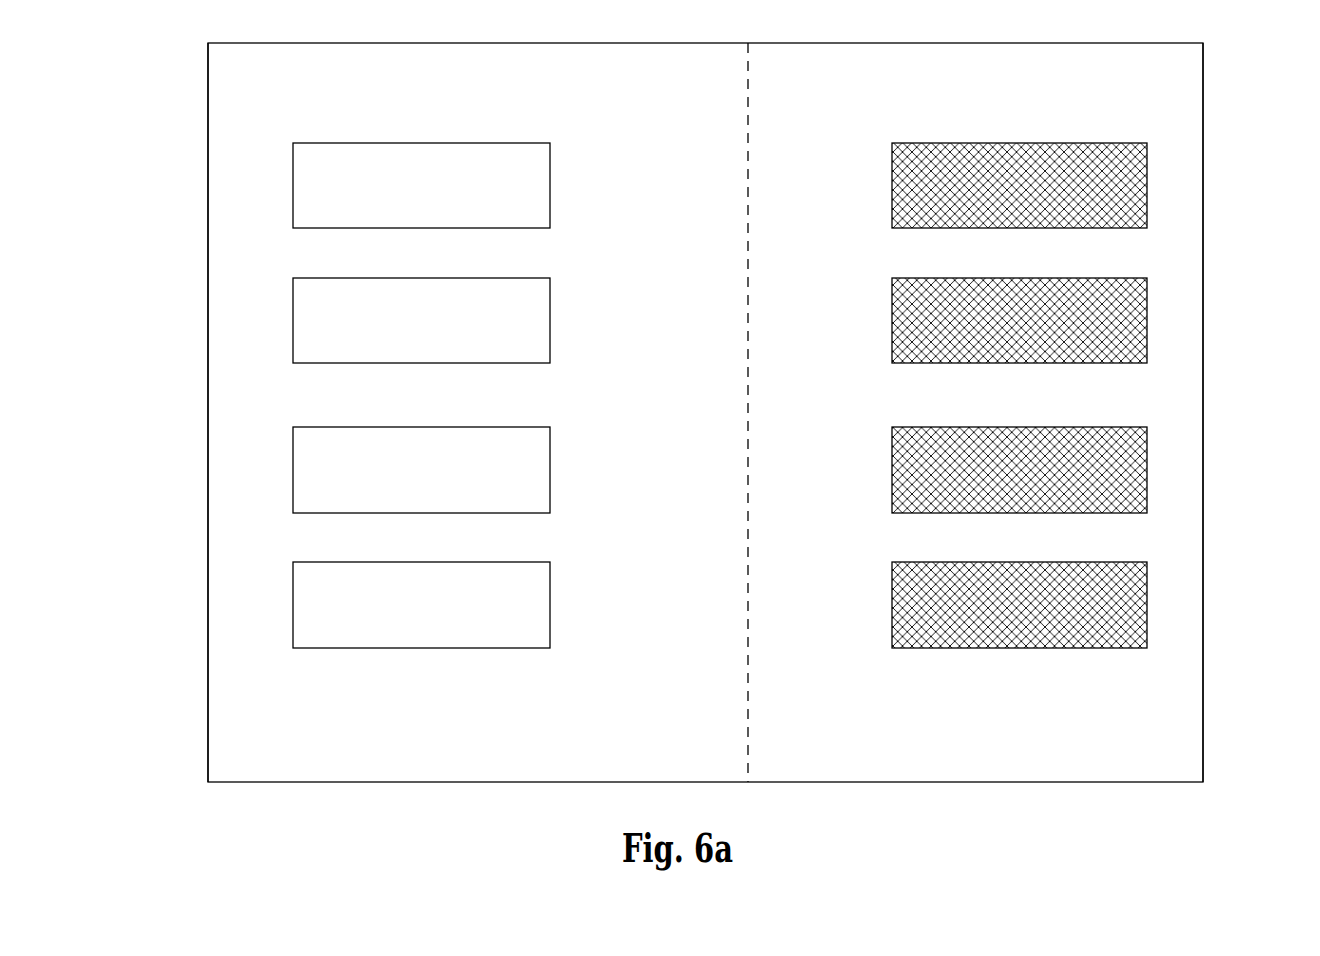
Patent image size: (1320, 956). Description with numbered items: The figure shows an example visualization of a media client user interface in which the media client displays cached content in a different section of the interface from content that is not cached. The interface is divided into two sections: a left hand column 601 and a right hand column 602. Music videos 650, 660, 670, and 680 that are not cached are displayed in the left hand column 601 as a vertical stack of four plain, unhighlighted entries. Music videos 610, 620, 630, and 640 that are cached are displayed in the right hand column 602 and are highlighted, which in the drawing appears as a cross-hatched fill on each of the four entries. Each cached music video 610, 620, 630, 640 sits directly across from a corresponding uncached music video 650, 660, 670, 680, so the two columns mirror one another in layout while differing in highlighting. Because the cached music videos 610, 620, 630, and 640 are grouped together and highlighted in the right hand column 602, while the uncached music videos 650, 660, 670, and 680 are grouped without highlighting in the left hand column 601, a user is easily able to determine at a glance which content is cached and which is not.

The left hand column 601 is at (265, 115).
The right hand column 602 is at (1132, 85).
The music video 610 is at (1119, 170).
The music video 620 is at (1147, 305).
The music video 630 is at (1119, 483).
The music video 640 is at (1147, 590).
The music video 650 is at (521, 171).
The music video 660 is at (550, 305).
The music video 670 is at (521, 484).
The music video 680 is at (550, 590).